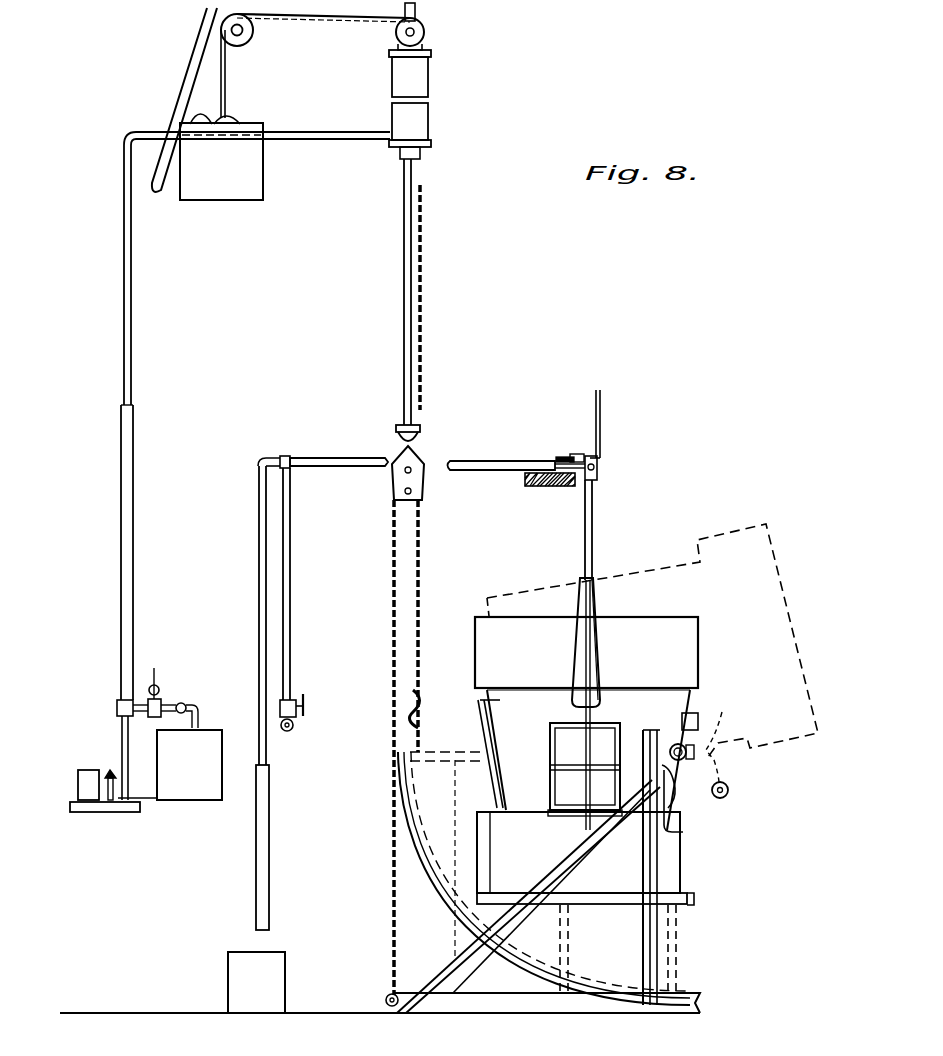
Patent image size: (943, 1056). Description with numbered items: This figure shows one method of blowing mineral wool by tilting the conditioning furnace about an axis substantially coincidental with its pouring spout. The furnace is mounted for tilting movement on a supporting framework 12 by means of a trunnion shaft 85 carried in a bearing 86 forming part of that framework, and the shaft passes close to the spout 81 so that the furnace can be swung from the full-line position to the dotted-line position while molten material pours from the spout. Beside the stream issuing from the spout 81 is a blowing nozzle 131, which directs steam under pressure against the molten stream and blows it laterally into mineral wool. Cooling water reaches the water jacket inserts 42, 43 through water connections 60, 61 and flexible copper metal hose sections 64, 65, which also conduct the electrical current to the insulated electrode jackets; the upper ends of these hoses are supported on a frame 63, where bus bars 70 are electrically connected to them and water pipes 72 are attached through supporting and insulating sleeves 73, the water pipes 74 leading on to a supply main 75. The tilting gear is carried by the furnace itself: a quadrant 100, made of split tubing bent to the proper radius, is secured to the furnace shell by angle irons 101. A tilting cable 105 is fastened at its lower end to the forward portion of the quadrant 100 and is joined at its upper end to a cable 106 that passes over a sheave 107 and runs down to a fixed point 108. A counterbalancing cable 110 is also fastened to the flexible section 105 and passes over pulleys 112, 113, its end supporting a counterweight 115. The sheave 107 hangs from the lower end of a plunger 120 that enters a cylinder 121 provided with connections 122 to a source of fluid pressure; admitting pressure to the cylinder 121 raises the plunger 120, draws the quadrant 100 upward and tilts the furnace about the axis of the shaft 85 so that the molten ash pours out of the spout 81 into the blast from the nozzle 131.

The framework 12 is at (455, 962).
The water jacket insert 42 is at (609, 741).
The water jacket insert 43 is at (557, 787).
The water connection 60 is at (578, 672).
The water connection 61 is at (594, 682).
The frame 63 is at (561, 487).
The flexible copper metal hose section 64 is at (594, 500).
The flexible copper metal hose section 65 is at (594, 527).
The bus bar 70 is at (601, 428).
The water pipe 72 is at (490, 460).
The supporting and insulating sleeve 73 is at (564, 456).
The pipe 74 is at (292, 562).
The supply main 75 is at (296, 724).
The spout 81 is at (699, 720).
The trunnion shaft 85 is at (682, 764).
The bearing 86 is at (686, 800).
The quadrant 100 is at (451, 888).
The angle iron 101 is at (452, 762).
The tilting cable 105 is at (420, 722).
The cable 106 is at (424, 518).
The sheave 107 is at (395, 478).
The fixed point 108 is at (385, 1000).
The counterbalancing cable 110 is at (426, 377).
The pulley 112 is at (396, 31).
The pulley 113 is at (251, 32).
The counterweight 115 is at (237, 194).
The plunger 120 is at (406, 290).
The cylinder 121 is at (400, 77).
The connection 122 is at (329, 141).
The blowing nozzle 131 is at (729, 790).